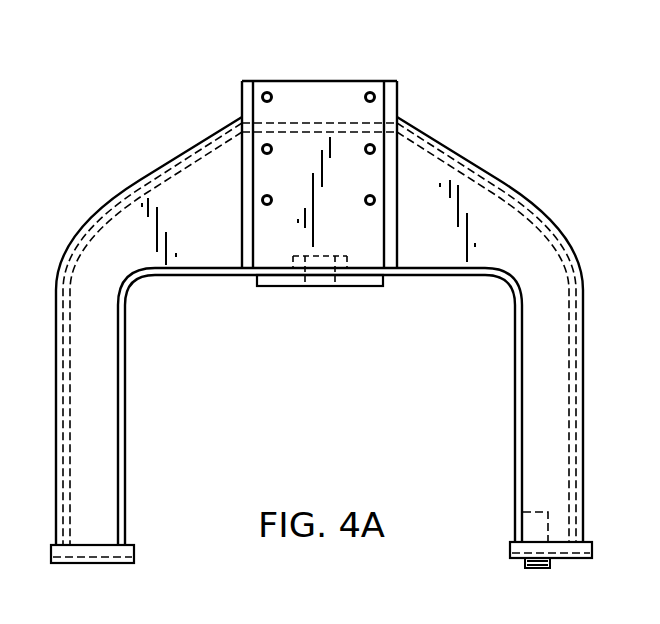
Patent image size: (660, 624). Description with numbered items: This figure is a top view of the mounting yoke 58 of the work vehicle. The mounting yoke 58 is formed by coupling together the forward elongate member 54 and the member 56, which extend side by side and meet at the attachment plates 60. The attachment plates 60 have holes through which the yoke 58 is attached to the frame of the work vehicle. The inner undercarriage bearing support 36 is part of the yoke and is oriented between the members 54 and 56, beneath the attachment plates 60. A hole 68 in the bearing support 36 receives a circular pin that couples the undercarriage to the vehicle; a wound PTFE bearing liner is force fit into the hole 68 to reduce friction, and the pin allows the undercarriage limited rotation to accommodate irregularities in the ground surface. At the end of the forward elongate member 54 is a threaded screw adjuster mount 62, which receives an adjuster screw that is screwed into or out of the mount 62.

The mounting yoke 58 is at (128, 126).
The attachment plates 60 is at (322, 88).
The member 56 is at (127, 432).
The forward elongate member 54 is at (583, 413).
The inner undercarriage bearing support 36 is at (287, 289).
The hole 68 is at (328, 288).
The threaded screw adjuster mount 62 is at (550, 562).